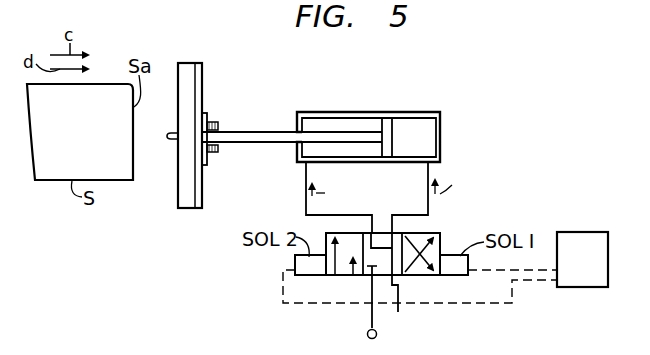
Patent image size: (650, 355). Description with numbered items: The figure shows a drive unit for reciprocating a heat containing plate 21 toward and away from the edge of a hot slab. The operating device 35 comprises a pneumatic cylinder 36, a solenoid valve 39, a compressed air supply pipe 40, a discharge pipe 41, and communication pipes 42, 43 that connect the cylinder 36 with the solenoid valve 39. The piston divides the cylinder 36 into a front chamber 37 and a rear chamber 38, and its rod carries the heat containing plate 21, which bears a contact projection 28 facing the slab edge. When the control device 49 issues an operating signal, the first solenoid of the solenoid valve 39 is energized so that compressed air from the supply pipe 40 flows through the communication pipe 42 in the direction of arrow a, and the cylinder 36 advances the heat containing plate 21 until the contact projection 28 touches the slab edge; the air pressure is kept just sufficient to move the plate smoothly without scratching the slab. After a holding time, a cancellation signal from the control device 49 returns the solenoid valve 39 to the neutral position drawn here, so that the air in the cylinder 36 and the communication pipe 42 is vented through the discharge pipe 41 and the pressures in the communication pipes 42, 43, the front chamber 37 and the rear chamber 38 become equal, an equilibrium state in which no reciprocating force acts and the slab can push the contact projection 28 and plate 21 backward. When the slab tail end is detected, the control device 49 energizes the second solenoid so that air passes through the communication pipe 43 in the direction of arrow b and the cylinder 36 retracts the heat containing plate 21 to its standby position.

The heat containing plate 21 is at (202, 194).
The contact projection 28 is at (167, 139).
The operating device 35 is at (367, 106).
The pneumatic cylinder 36 is at (336, 112).
The front chamber 37 is at (421, 126).
The rear chamber 38 is at (317, 122).
The solenoid valve 39 is at (424, 236).
The compressed air supply pipe 40 is at (371, 320).
The discharge pipe 41 is at (398, 293).
The communication pipe 42 is at (427, 192).
The communication pipe 43 is at (305, 203).
The control device 49 is at (578, 232).